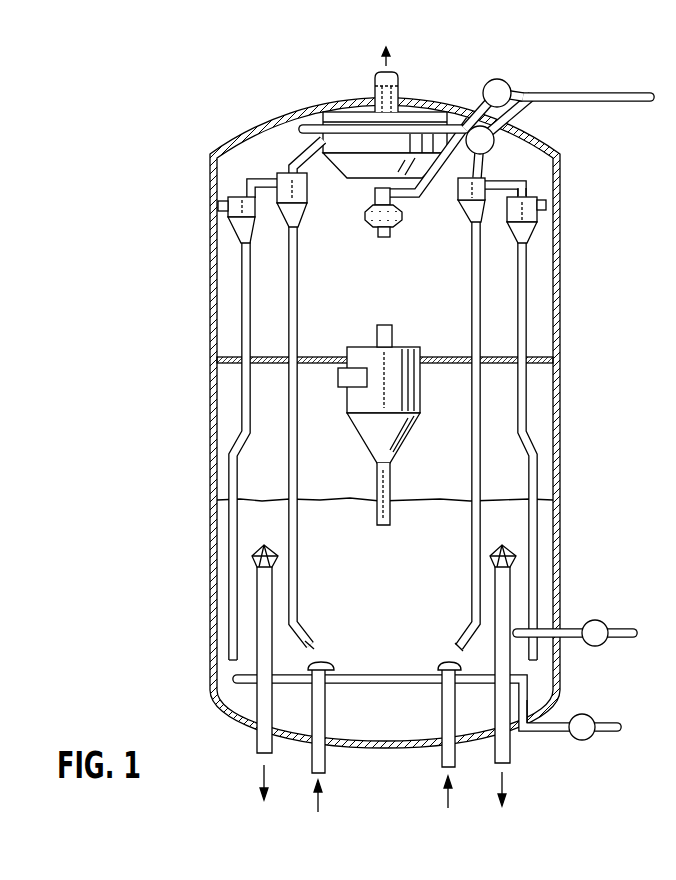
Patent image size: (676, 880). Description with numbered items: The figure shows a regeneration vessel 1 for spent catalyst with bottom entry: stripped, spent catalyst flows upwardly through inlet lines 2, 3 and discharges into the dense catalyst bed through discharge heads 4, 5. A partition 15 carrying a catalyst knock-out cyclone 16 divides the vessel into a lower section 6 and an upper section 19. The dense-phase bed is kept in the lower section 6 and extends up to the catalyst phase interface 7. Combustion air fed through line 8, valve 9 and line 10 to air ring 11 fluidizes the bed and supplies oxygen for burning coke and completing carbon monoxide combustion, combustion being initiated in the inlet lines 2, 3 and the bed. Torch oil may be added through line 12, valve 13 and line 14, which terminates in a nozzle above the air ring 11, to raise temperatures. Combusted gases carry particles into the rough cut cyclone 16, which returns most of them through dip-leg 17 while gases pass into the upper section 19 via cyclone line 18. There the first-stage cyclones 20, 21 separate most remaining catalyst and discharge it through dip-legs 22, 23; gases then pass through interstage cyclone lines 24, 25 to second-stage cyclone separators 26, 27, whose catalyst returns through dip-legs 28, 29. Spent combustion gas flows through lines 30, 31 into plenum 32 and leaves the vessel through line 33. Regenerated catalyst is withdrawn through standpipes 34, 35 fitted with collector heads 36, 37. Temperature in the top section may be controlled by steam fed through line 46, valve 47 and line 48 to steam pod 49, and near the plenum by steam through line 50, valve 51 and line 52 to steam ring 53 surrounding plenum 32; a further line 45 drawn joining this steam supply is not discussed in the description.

The regeneration vessel 1 is at (205, 294).
The inlet line 2 is at (326, 708).
The inlet line 3 is at (441, 706).
The discharge head 4 is at (326, 665).
The discharge head 5 is at (440, 668).
The lower section 6 is at (391, 603).
The catalyst phase interface 7 is at (426, 497).
The line 8 is at (612, 722).
The valve 9 is at (590, 715).
The line 10 is at (540, 692).
The air ring 11 is at (385, 682).
The line 12 is at (633, 628).
The valve 13 is at (603, 622).
The line 14 is at (550, 632).
The partition 15 is at (454, 364).
The catalyst knock-out cyclone 16 is at (346, 402).
The dip-leg 17 is at (376, 483).
The cyclone line 18 is at (376, 336).
The upper section 19 is at (432, 301).
The first-stage cyclone 20 is at (258, 222).
The first-stage cyclone 21 is at (511, 216).
The dip-leg 22 is at (251, 302).
The dip-leg 23 is at (519, 305).
The interstage cyclone line 24 is at (262, 178).
The interstage cyclone line 25 is at (530, 185).
The second-stage cyclone separator 26 is at (309, 192).
The second-stage cyclone separator 27 is at (470, 212).
The dip-leg 28 is at (298, 305).
The dip-leg 29 is at (470, 310).
The line 30 is at (305, 158).
The line 31 is at (460, 200).
The plenum 32 is at (373, 177).
The line 33 is at (373, 82).
The standpipe 34 is at (272, 705).
The standpipe 35 is at (494, 703).
The collector head 36 is at (268, 545).
The collector head 37 is at (507, 545).
The feed line 45 is at (614, 101).
The line 46 is at (521, 108).
The valve 47 is at (487, 148).
The line 48 is at (498, 174).
The steam pod 49 is at (368, 208).
The line 50 is at (516, 96).
The valve 51 is at (491, 81).
The line 52 is at (477, 109).
The steam ring 53 is at (414, 124).